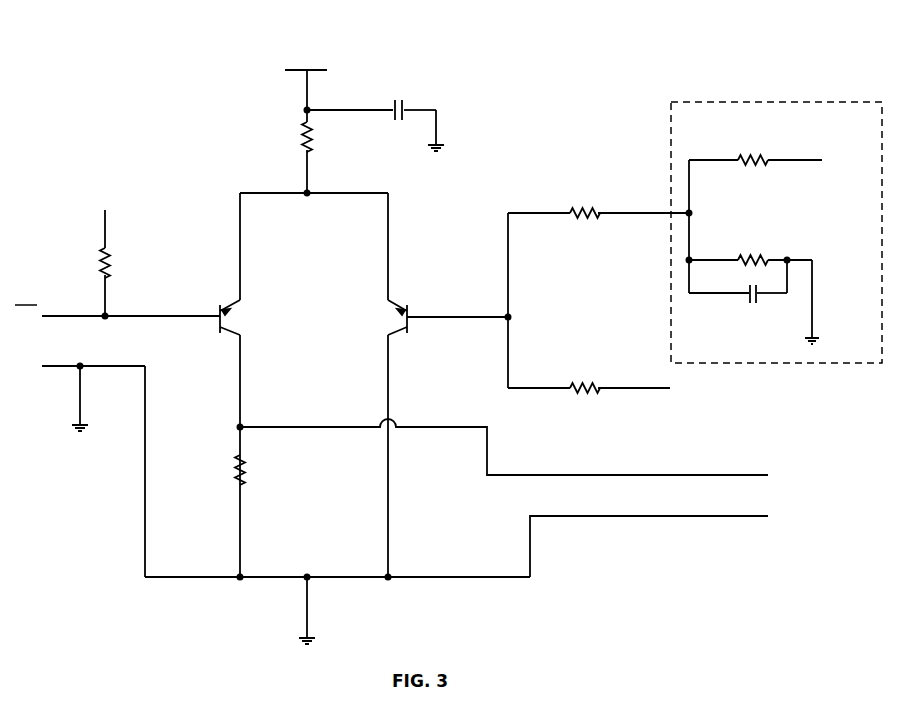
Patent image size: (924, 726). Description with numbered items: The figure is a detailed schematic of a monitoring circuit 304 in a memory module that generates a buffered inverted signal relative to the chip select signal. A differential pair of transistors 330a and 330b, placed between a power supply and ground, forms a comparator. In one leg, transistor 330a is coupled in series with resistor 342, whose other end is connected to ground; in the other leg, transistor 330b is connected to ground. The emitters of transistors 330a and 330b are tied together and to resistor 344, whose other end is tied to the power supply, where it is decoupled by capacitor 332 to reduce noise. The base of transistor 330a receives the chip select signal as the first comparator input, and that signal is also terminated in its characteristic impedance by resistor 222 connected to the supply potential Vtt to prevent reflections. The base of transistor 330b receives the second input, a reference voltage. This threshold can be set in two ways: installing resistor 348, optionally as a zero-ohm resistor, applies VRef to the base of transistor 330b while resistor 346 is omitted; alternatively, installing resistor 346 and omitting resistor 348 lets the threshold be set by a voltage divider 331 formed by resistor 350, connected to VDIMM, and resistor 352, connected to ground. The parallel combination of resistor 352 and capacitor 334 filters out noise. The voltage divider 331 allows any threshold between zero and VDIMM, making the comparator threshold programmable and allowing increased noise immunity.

The monitoring circuit 304 is at (140, 49).
The resistor 222 is at (110, 260).
The transistor 330a is at (229, 303).
The transistor 330b is at (396, 303).
The capacitor 332 is at (403, 106).
The resistor 344 is at (310, 147).
The resistor 346 is at (592, 211).
The resistor 348 is at (592, 386).
The voltage divider 331 is at (740, 102).
The resistor 350 is at (765, 158).
The resistor 352 is at (765, 258).
The capacitor 334 is at (748, 297).
The resistor 342 is at (244, 469).